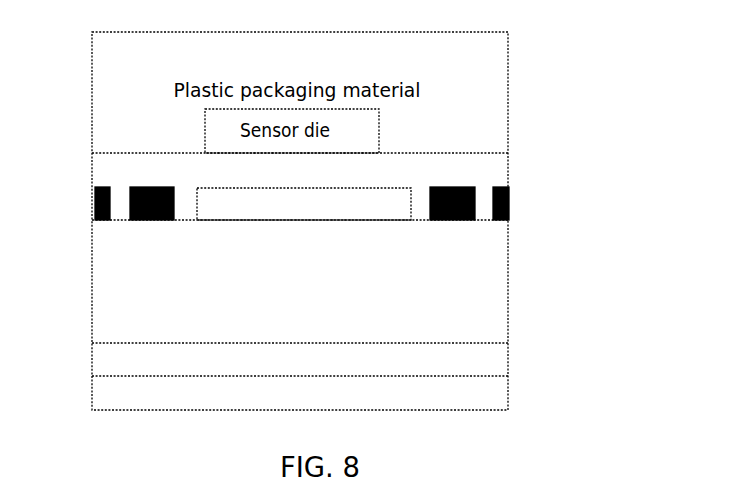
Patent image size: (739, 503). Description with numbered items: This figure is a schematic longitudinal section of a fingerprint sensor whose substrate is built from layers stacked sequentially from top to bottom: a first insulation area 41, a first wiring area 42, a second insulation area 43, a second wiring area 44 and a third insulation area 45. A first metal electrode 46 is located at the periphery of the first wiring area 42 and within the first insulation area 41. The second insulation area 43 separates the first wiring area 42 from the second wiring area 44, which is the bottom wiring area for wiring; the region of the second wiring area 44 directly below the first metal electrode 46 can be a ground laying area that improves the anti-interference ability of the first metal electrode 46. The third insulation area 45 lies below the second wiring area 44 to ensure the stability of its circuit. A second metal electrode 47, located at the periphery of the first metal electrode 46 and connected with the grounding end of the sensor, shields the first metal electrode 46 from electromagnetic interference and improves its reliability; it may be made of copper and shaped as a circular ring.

The first insulation area 41 is at (490, 175).
The first wiring area 42 is at (387, 203).
The second insulation area 43 is at (435, 323).
The second wiring area 44 is at (435, 368).
The third insulation area 45 is at (122, 397).
The first metal electrode 46 is at (133, 187).
The second metal electrode 47 is at (95, 201).